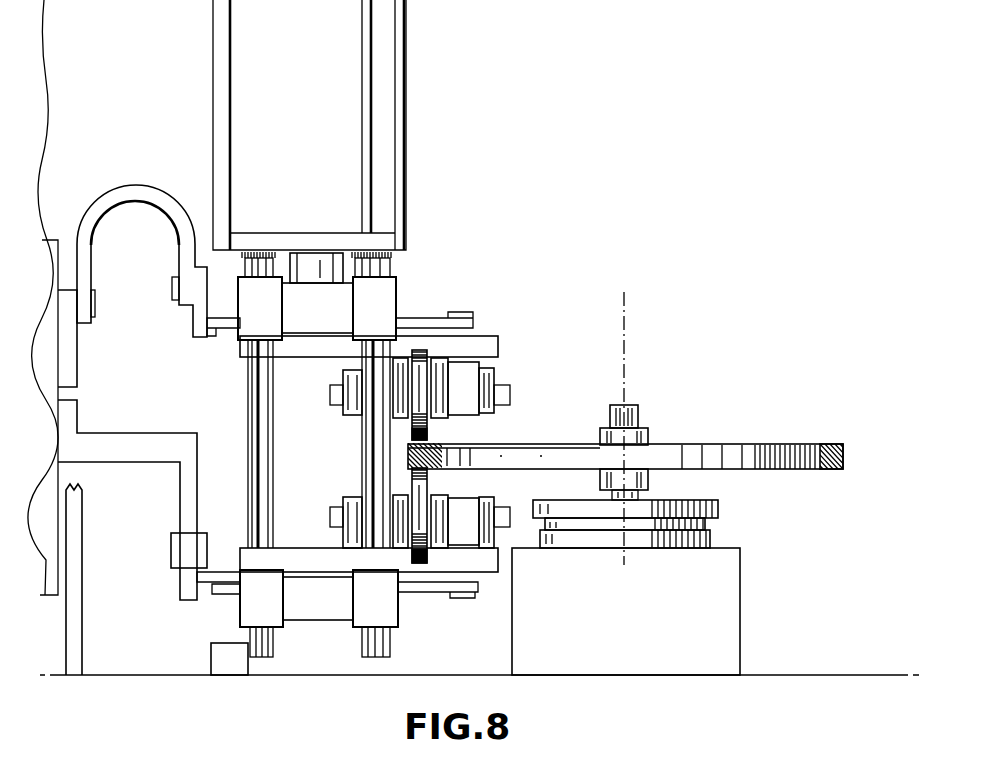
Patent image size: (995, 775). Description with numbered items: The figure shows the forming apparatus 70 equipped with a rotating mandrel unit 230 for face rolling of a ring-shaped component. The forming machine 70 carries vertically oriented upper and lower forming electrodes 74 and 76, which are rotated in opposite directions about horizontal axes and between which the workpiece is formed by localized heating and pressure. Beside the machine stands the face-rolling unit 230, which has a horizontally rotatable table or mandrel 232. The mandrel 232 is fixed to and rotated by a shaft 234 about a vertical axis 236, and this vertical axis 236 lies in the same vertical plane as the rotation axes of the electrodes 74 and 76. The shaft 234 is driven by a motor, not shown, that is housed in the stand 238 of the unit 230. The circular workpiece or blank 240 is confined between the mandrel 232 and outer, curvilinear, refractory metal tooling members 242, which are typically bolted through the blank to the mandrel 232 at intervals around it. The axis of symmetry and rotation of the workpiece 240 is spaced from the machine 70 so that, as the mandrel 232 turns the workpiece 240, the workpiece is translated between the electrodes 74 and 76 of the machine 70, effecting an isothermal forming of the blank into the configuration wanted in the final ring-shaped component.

The apparatus 70 is at (407, 160).
The upper forming electrode 74 is at (422, 372).
The lower forming electrode 76 is at (425, 560).
The unit 230 is at (670, 587).
The mandrel 232 is at (662, 418).
The shaft 234 is at (638, 405).
The vertical axis 236 is at (627, 325).
The stand 238 is at (710, 622).
The workpiece 240 is at (740, 443).
The tooling members 242 is at (845, 457).